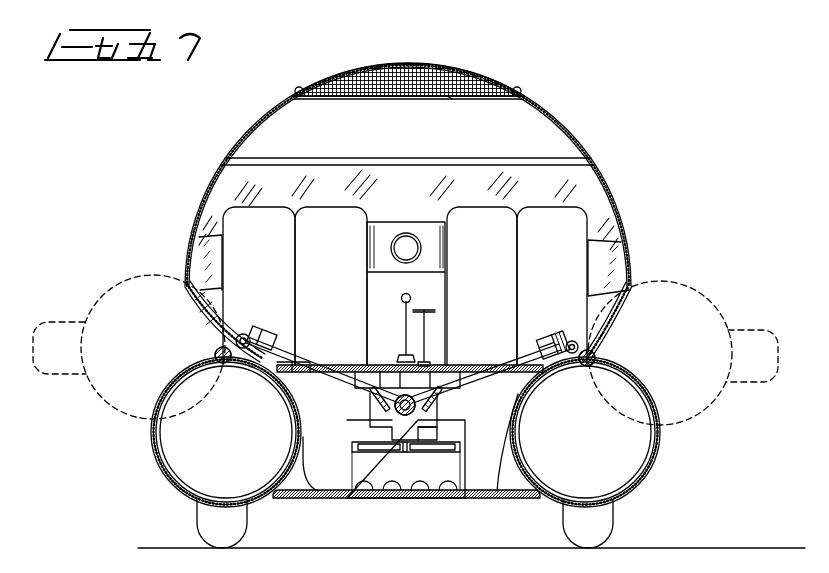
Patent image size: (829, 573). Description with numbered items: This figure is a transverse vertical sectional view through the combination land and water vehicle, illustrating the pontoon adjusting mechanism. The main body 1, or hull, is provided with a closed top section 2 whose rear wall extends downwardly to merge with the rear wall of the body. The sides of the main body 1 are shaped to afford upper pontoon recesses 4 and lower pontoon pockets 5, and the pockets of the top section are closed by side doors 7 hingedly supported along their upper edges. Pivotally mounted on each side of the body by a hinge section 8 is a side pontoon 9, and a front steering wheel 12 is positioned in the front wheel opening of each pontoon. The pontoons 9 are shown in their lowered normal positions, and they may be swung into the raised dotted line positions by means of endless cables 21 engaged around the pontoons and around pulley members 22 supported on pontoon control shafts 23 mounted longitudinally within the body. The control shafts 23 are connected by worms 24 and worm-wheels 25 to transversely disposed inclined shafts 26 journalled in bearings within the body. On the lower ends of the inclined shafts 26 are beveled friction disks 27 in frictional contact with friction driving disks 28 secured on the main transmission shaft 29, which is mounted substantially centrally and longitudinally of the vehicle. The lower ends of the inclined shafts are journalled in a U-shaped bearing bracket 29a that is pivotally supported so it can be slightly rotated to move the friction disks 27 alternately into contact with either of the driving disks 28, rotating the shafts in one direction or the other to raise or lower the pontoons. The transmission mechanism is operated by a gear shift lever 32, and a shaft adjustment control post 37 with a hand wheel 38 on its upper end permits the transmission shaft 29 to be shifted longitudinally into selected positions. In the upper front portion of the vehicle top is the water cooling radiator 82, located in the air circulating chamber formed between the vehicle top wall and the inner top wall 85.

The main body 1 is at (310, 500).
The top section 2 is at (608, 192).
The upper pontoon recesses 4 is at (594, 313).
The lower pontoon pockets 5 is at (547, 380).
The side doors 7 is at (560, 130).
The hinge section 8 is at (596, 358).
The side pontoon 9 is at (646, 478).
The front steering wheel 12 is at (212, 521).
The endless cables 21 is at (257, 362).
The pulley members 22 is at (262, 338).
The pontoon control shafts 23 is at (246, 337).
The worms 24 is at (550, 332).
The worm-wheels 25 is at (594, 350).
The inclined shafts 26 is at (307, 366).
The beveled friction disks 27 is at (440, 410).
The friction driving disks 28 is at (442, 380).
The main transmission shaft 29 is at (380, 405).
The U-shaped bearing bracket 29a is at (436, 431).
The gear shift lever 32 is at (398, 315).
The shaft adjustment control post 37 is at (427, 326).
The hand wheel 38 is at (430, 312).
The water cooling radiator 82 is at (366, 74).
The inner top wall 85 is at (452, 99).